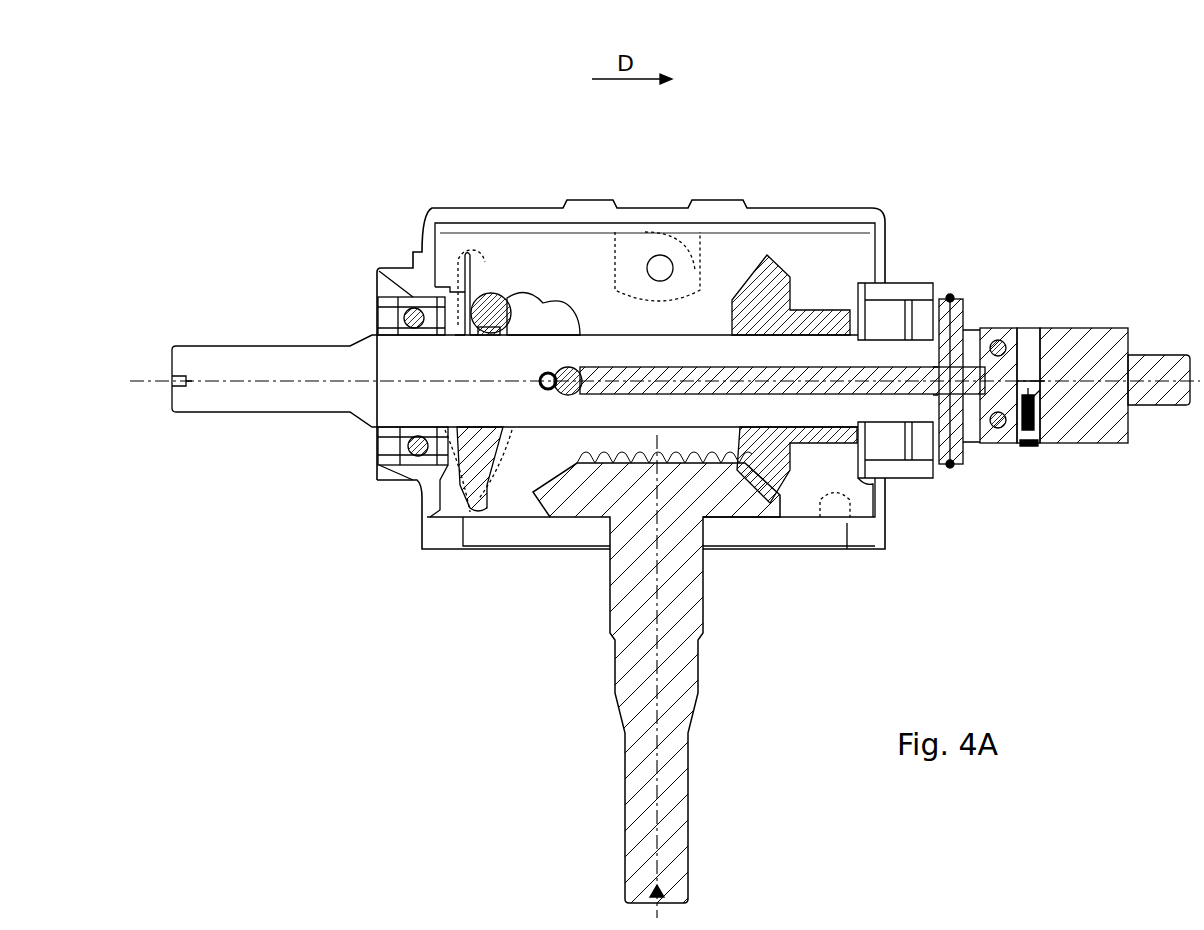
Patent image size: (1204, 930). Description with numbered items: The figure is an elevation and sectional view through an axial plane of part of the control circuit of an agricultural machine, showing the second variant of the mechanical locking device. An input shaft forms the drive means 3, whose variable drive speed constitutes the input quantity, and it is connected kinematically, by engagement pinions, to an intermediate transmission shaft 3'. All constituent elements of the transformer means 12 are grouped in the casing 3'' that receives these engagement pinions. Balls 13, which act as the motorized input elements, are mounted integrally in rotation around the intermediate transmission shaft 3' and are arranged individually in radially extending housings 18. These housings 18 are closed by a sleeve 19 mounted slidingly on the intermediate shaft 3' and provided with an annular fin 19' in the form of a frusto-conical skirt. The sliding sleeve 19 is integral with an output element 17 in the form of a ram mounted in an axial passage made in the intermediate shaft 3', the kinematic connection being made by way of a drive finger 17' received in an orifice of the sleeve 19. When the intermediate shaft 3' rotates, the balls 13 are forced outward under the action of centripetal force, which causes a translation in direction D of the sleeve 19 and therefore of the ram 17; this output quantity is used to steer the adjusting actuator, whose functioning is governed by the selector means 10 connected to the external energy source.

The drive means 3 is at (656, 677).
The intermediate transmission shaft 3' is at (515, 406).
The casing 3'' is at (860, 303).
The selector means 10 is at (1040, 468).
The transformer means 12 is at (852, 243).
The balls 13 is at (487, 343).
The output element 17 is at (782, 505).
The drive finger 17' is at (648, 263).
The housings 18 is at (481, 283).
The sleeve 19 is at (597, 241).
The annular fin 19' is at (522, 233).